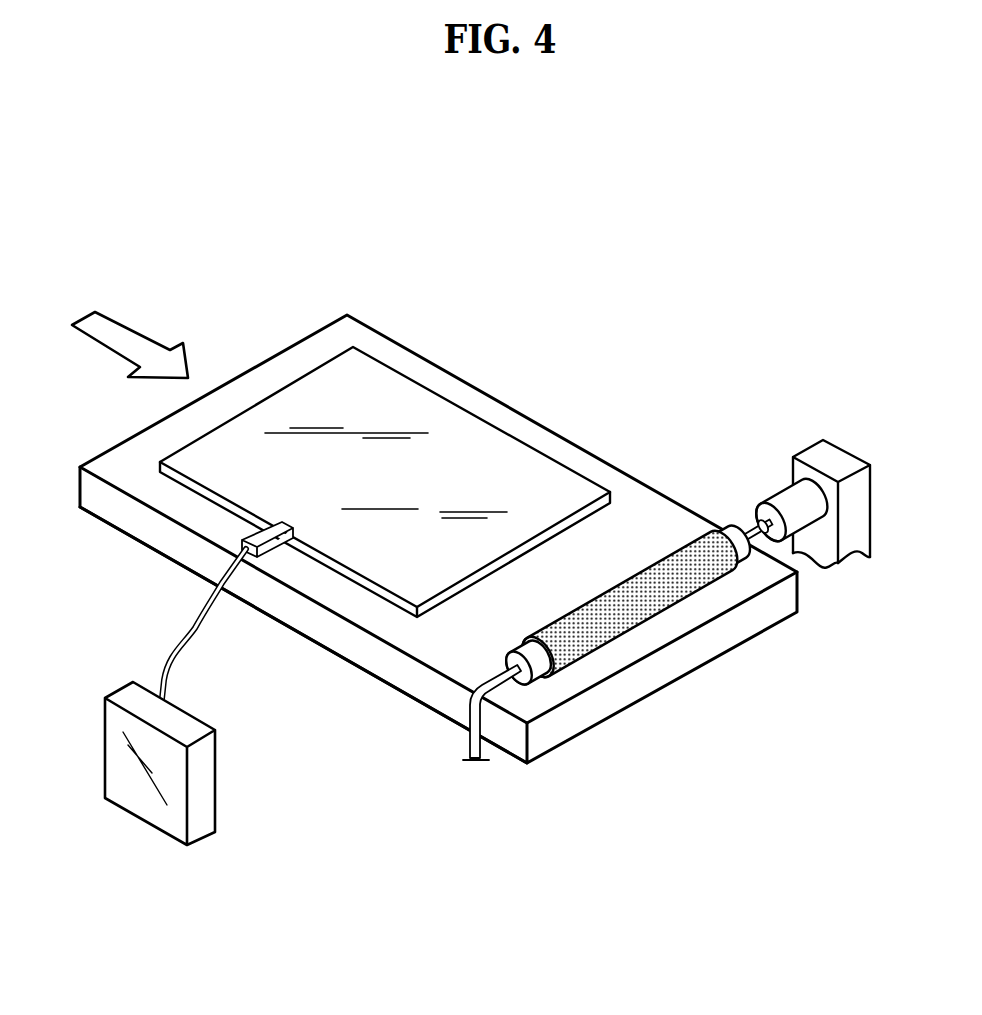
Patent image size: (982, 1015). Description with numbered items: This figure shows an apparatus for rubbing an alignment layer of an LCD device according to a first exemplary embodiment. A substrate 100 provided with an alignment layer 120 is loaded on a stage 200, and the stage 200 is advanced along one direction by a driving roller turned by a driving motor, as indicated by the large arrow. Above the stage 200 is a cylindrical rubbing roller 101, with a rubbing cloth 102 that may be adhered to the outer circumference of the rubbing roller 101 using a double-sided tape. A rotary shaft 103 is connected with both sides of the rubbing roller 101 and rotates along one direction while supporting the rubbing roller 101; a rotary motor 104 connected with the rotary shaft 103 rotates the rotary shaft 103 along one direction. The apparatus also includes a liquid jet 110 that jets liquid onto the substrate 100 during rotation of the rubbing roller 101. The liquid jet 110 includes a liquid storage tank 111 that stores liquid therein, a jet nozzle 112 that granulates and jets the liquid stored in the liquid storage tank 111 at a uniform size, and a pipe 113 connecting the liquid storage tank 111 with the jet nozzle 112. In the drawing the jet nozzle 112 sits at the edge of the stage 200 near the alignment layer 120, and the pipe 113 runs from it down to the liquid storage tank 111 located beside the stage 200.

The substrate 100 is at (362, 580).
The rubbing roller 101 is at (736, 554).
The rubbing cloth 102 is at (675, 593).
The rotary shaft 103 is at (743, 535).
The rotary motor 104 is at (782, 500).
The liquid jet 110 is at (140, 642).
The liquid storage tank 111 is at (207, 782).
The jet nozzle 112 is at (242, 540).
The pipe 113 is at (197, 637).
The alignment layer 120 is at (415, 392).
The stage 200 is at (515, 425).